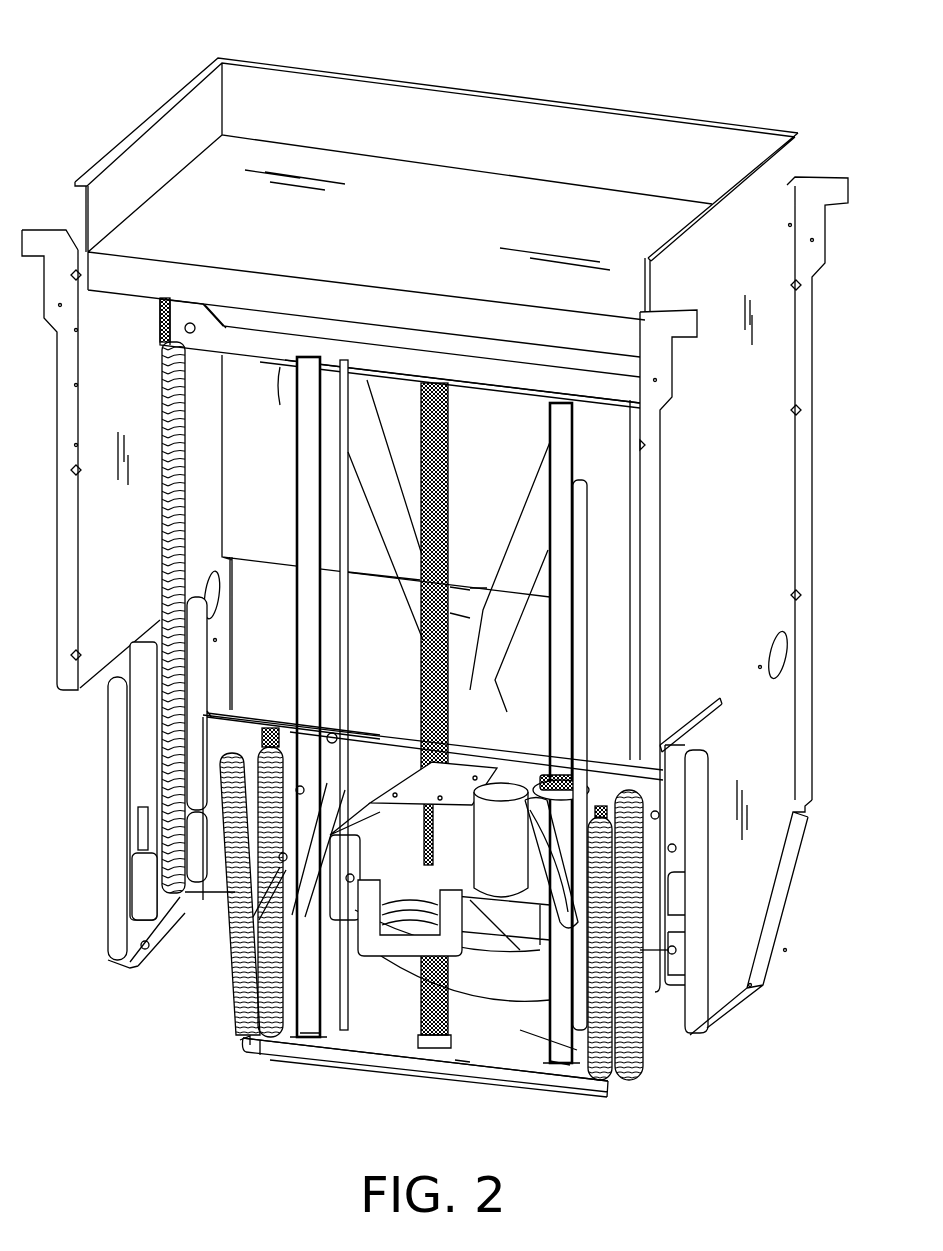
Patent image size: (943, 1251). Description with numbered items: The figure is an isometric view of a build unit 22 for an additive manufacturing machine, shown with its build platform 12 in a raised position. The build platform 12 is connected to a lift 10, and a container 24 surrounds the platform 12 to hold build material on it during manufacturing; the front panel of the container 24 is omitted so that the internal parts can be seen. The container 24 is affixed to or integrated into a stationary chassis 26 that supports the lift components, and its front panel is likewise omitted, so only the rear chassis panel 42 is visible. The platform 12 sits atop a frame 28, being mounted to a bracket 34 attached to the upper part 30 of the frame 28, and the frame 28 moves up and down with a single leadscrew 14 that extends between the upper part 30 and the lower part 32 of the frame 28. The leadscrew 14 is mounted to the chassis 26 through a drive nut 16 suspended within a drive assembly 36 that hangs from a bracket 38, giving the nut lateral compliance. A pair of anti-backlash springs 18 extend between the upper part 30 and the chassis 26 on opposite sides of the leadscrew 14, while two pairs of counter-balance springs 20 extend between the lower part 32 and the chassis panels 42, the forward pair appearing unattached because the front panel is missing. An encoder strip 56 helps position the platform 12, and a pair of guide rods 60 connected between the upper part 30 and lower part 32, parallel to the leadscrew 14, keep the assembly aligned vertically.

The lift 10 is at (128, 1028).
The build platform 12 is at (422, 182).
The leadscrew 14 is at (455, 450).
The drive nut 16 is at (472, 915).
The anti-backlash springs 18 is at (172, 553).
The counter-balance springs 20 is at (250, 972).
The build unit 22 is at (50, 100).
The container 24 is at (331, 84).
The chassis 26 is at (118, 750).
The frame 28 is at (507, 570).
The upper part of frame 30 is at (450, 396).
The lower part of frame 32 is at (500, 1050).
The bracket 34 is at (324, 352).
The drive assembly 36 is at (398, 960).
The bracket 38 is at (462, 770).
The chassis panel 42 is at (243, 742).
The encoder strip 56 is at (347, 653).
The guide rods 60 is at (307, 500).